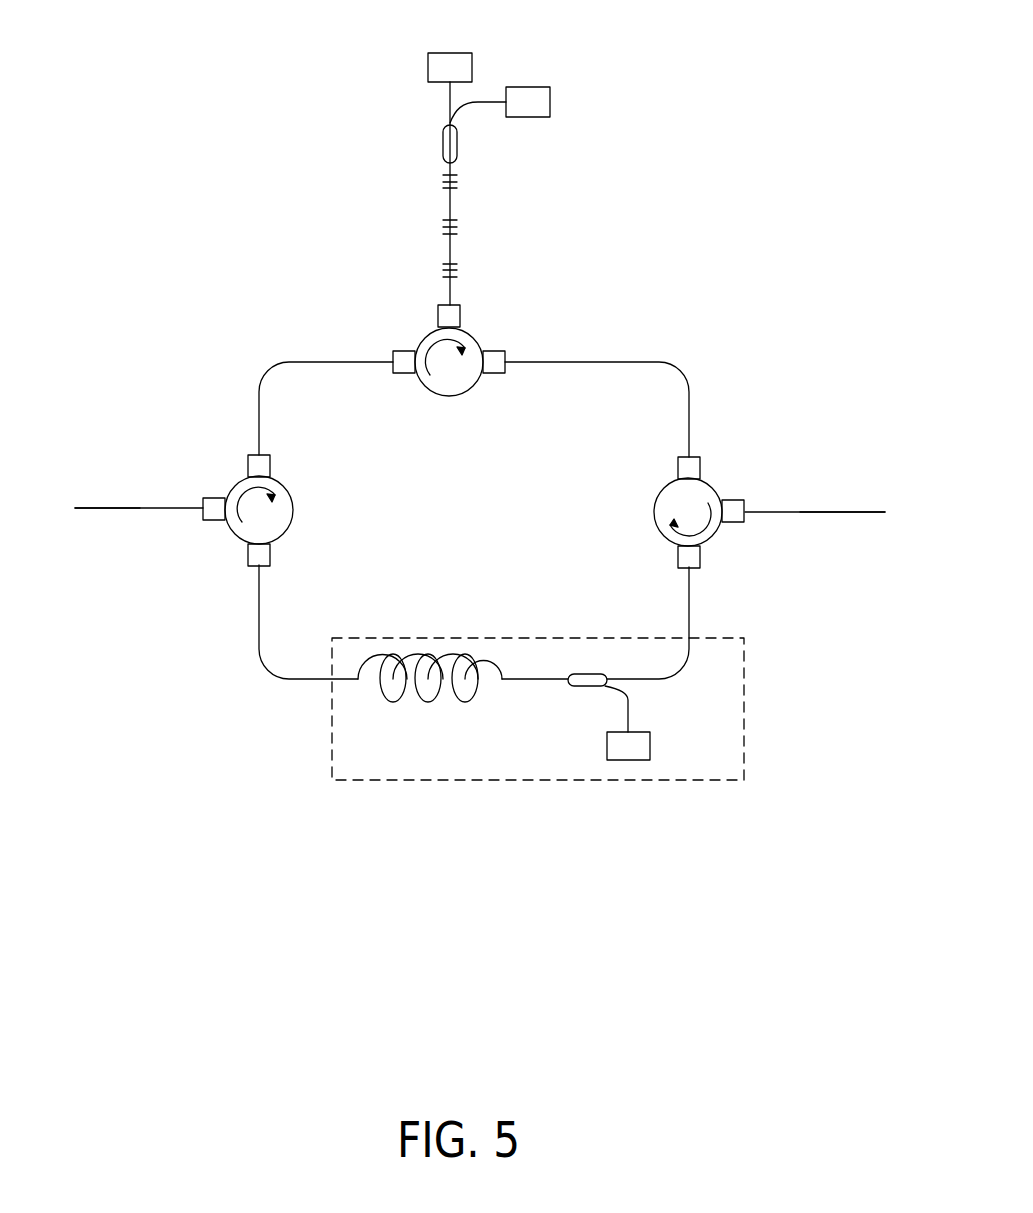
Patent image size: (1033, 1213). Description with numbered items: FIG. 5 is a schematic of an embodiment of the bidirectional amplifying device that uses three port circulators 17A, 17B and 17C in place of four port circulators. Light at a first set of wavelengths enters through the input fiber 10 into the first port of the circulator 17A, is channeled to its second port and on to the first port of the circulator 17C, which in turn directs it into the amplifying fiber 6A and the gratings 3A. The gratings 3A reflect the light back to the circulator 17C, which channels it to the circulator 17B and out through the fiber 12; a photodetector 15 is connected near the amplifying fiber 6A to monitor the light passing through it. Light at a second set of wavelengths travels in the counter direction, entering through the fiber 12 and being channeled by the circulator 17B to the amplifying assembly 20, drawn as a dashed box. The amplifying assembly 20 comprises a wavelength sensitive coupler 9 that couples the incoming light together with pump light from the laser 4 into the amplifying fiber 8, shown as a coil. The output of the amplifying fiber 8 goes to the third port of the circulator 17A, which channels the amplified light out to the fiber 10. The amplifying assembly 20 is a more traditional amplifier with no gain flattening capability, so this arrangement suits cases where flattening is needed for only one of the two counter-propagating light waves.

The photodetector 15 is at (428, 78).
The laser 4 is at (550, 102).
The amplifying fiber 6A is at (450, 205).
The gratings 3A is at (460, 181).
The circulator 17C is at (483, 345).
The circulator 17A is at (233, 535).
The circulator 17B is at (720, 495).
The input fiber 10 is at (98, 508).
The fiber 12 is at (850, 512).
The amplifying fiber 8 is at (428, 702).
The wavelength sensitive coupler 9 is at (585, 673).
The amplifying assembly 20 is at (744, 688).